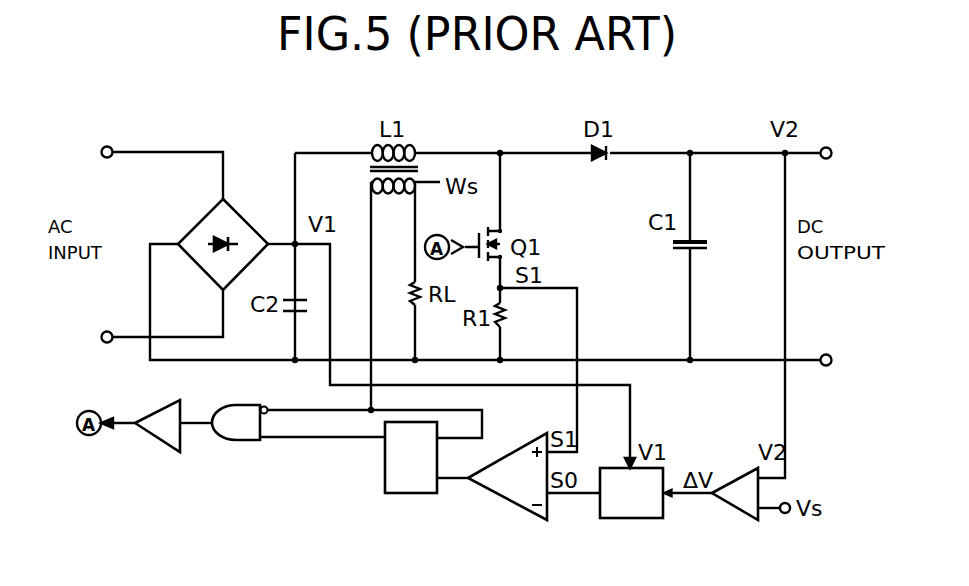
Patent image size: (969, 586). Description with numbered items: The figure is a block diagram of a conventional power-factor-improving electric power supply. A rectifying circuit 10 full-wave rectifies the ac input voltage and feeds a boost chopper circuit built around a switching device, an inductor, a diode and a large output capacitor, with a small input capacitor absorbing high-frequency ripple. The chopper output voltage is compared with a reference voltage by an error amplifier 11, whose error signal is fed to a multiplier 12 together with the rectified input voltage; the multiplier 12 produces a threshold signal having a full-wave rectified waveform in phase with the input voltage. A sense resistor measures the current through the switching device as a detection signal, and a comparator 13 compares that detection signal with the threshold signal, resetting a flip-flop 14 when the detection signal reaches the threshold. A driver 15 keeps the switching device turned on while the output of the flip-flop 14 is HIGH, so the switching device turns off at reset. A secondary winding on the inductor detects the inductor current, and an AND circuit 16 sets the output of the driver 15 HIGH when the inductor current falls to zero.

The rectifying circuit 10 is at (196, 223).
The error amplifier 11 is at (733, 521).
The multiplier 12 is at (623, 519).
The comparator 13 is at (496, 494).
The flip-flop 14 is at (410, 494).
The driver 15 is at (157, 445).
The AND circuit 16 is at (230, 442).